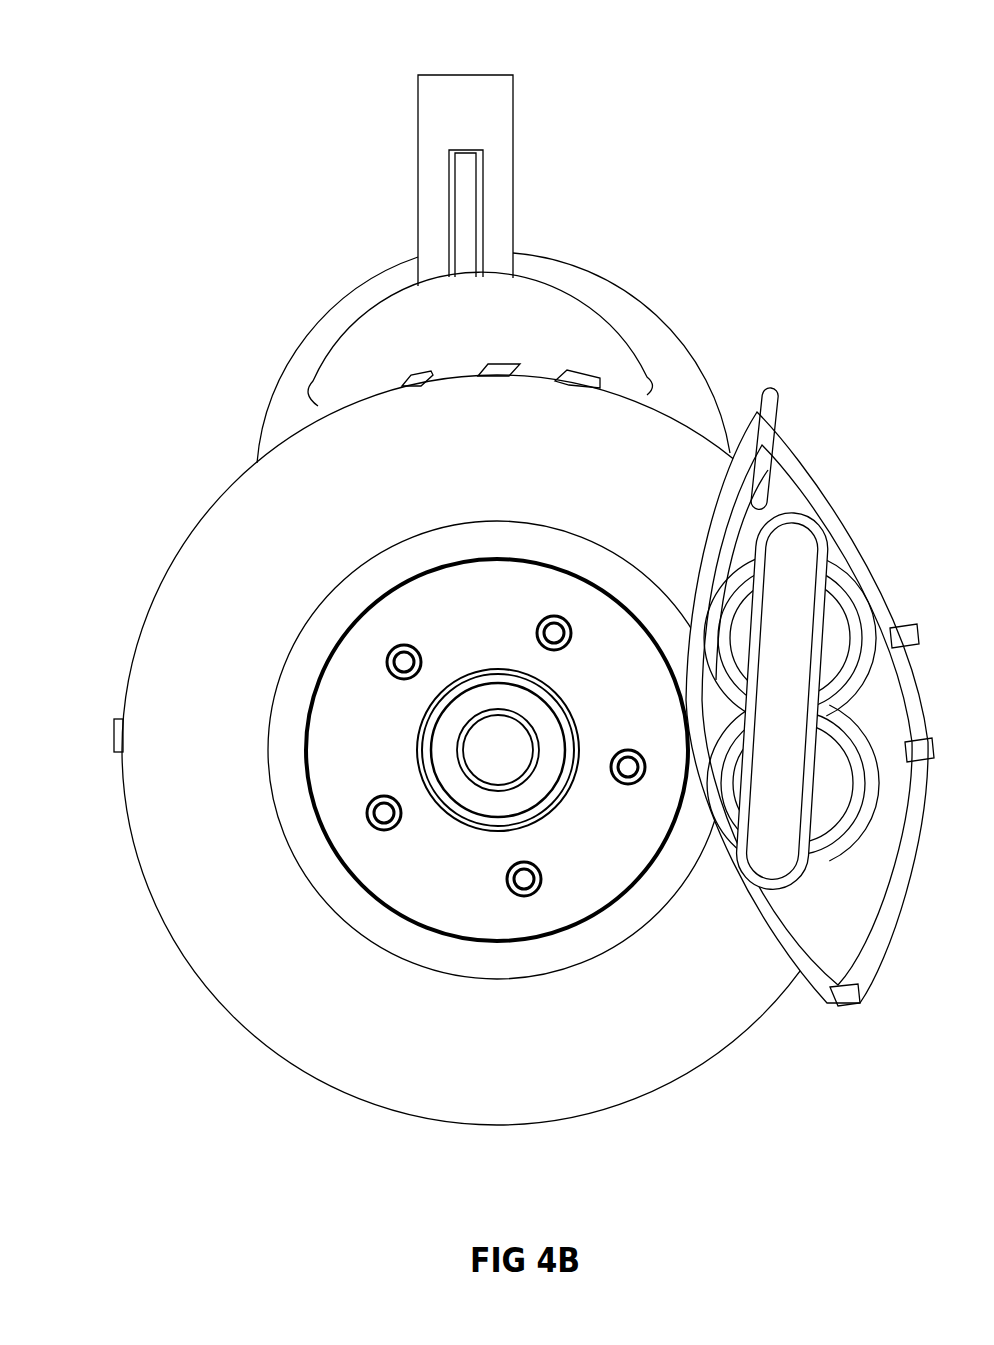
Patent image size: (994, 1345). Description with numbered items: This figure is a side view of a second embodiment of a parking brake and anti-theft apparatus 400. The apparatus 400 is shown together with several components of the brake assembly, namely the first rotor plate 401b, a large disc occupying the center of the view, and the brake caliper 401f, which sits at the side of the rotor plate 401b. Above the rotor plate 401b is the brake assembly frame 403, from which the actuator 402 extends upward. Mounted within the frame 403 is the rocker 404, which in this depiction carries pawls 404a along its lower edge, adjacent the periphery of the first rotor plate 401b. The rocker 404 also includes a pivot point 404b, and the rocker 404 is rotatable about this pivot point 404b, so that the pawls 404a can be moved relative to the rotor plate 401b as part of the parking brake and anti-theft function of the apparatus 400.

The apparatus 400 is at (112, 56).
The first rotor plate 401b is at (331, 990).
The brake caliper 401f is at (825, 973).
The actuator 402 is at (470, 99).
The brake assembly frame 403 is at (633, 332).
The rocker 404 is at (385, 367).
The pawls 404a is at (390, 383).
The pivot point 404b is at (470, 323).